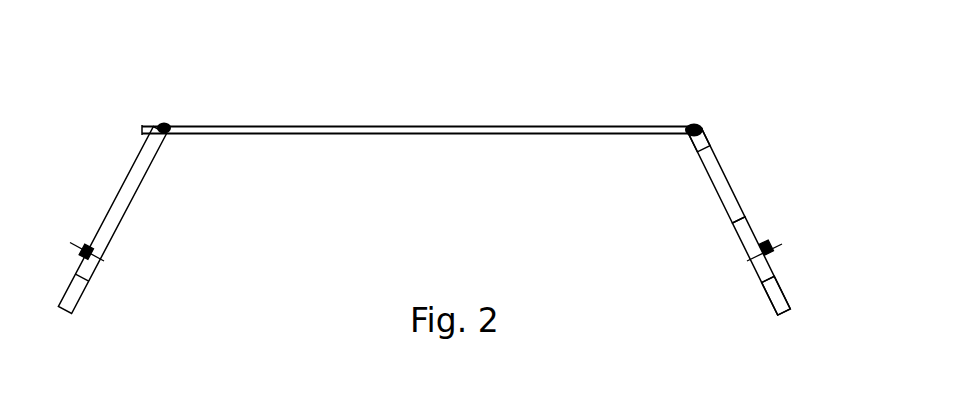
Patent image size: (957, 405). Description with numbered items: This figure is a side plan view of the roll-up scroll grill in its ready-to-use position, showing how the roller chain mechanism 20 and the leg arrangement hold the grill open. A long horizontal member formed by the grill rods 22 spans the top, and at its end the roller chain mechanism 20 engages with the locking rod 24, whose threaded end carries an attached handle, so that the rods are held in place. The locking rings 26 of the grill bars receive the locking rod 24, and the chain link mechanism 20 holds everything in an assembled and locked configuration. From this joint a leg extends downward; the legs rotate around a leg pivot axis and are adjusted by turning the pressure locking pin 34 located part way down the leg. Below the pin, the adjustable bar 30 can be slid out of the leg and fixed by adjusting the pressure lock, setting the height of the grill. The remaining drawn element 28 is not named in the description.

The roller chain mechanism 20 is at (702, 131).
The grill rods 22 is at (493, 124).
The locking rod 24 is at (699, 122).
The locking rings 26 is at (699, 136).
The leg lower section 28 is at (745, 215).
The adjustable bar 30 is at (789, 287).
The pressure locking pin 34 is at (770, 255).